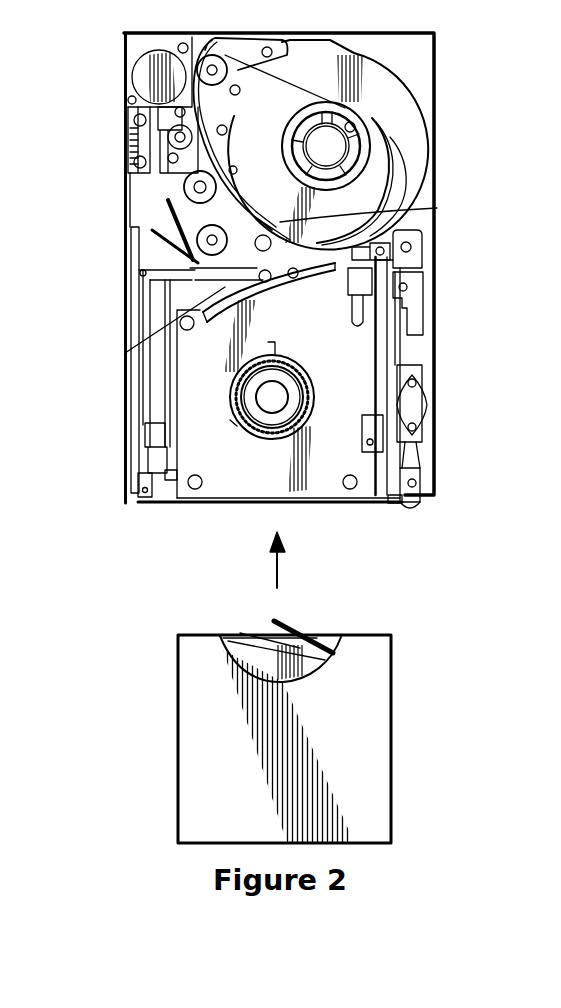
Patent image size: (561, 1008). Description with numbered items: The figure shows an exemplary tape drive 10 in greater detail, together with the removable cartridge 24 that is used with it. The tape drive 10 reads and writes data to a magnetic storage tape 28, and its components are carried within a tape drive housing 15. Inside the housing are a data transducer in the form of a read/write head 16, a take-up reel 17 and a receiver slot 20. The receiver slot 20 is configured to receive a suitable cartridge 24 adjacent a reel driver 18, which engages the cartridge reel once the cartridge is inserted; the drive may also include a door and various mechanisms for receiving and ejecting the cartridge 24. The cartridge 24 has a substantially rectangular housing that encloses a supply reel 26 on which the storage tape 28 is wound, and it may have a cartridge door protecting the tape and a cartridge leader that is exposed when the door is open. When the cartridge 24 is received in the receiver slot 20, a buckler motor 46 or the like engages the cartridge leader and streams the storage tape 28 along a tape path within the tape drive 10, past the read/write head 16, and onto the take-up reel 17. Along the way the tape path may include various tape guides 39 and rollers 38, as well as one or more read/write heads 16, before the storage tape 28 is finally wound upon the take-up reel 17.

The tape drive 10 is at (446, 235).
The tape drive housing 15 is at (436, 311).
The read/write head 16 is at (128, 145).
The take-up reel 17 is at (405, 117).
The reel driver 18 is at (232, 398).
The receiver slot 20 is at (360, 492).
The cartridge 24 is at (396, 698).
The supply reel 26 is at (262, 650).
The storage tape 28 is at (275, 625).
The rollers 38 is at (200, 248).
The tape guides 39 is at (150, 53).
The buckler motor 46 is at (215, 290).